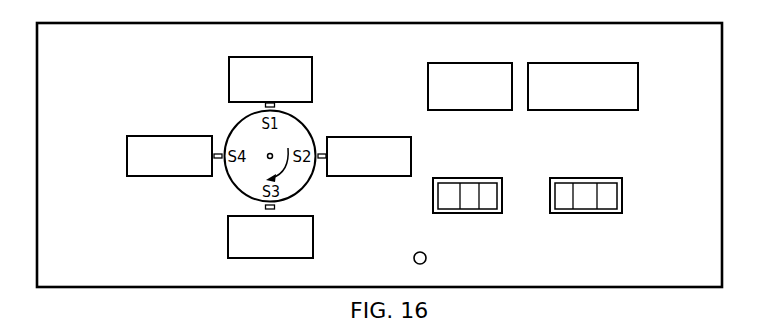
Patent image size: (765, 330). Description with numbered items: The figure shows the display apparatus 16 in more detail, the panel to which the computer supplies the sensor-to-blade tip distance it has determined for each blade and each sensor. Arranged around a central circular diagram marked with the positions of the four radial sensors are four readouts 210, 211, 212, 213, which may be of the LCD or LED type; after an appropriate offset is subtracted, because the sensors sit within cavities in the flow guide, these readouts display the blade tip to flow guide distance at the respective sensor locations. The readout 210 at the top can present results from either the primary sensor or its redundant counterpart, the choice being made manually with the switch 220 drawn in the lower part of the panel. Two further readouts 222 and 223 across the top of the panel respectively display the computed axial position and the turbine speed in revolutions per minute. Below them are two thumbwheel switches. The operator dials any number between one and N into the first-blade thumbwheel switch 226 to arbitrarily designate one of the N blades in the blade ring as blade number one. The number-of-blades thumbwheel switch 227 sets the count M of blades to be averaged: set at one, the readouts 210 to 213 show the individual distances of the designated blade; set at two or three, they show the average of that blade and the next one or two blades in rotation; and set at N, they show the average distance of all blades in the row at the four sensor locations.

The display apparatus 16 is at (660, 288).
The readout 210 is at (228, 77).
The readout 211 is at (367, 137).
The readout 212 is at (228, 236).
The readout 213 is at (155, 136).
The switch 220 is at (414, 259).
The readout 222 is at (457, 63).
The readout 223 is at (603, 63).
The thumbwheel switch 226 is at (433, 200).
The thumbwheel switch 227 is at (623, 199).